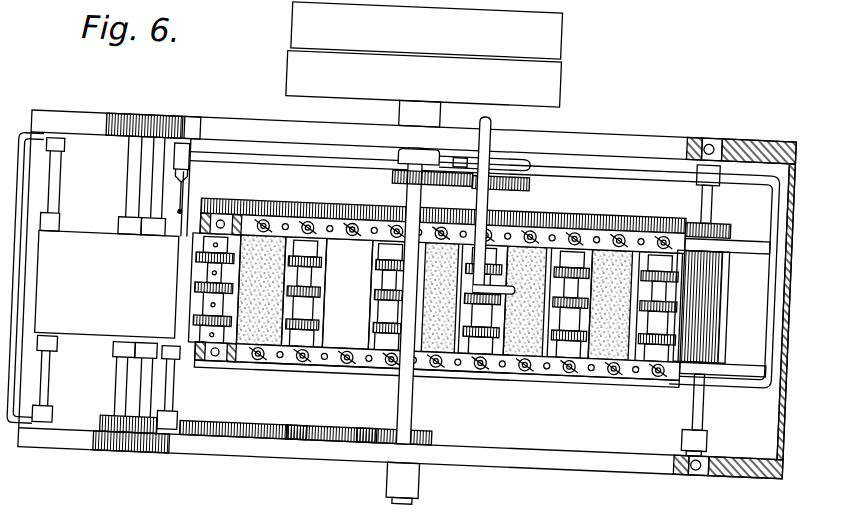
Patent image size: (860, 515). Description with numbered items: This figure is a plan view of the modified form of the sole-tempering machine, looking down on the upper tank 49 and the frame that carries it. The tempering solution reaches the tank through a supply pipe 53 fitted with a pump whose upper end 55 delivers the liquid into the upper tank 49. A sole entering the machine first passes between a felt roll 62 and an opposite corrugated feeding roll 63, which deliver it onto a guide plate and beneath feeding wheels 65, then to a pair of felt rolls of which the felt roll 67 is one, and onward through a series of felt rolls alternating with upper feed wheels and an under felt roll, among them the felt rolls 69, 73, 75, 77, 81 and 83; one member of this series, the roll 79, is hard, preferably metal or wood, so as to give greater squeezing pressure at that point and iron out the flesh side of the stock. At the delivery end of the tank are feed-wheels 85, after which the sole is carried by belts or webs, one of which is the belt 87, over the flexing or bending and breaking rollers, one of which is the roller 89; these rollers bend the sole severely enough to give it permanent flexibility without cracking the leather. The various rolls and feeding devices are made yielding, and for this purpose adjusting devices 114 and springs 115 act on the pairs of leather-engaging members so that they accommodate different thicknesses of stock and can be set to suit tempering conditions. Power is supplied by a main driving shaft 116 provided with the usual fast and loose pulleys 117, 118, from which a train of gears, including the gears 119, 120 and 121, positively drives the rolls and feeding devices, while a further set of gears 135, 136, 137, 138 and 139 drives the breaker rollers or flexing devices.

The upper tank 49 is at (757, 360).
The supply pipe 53 is at (491, 102).
The upper end of the pump 55 is at (492, 353).
The felt roll 62 is at (735, 303).
The corrugated feeding roll 63 is at (716, 250).
The feeding wheels 65 is at (684, 250).
The felt roll 67 is at (645, 260).
The felt roll 69 is at (590, 290).
The felt roll 73 is at (489, 355).
The felt roll 75 is at (448, 352).
The felt roll 77 is at (383, 315).
The hard roll 79 is at (383, 290).
The felt roll 81 is at (326, 282).
The felt roll 83 is at (250, 330).
The feed-wheels 85 is at (200, 262).
The flexing belt 87 is at (107, 284).
The breaking roller 89 is at (122, 372).
The adjusting devices 114 is at (300, 207).
The springs 115 is at (711, 116).
The main driving shaft 116 is at (424, 386).
The fast pulley 117 is at (423, 91).
The loose pulley 118 is at (427, 30).
The gear 119 is at (394, 162).
The gear 120 is at (463, 144).
The gear 121 is at (530, 165).
The gear 135 is at (410, 384).
The gear 136 is at (342, 414).
The gear 137 is at (308, 430).
The gear 138 is at (262, 410).
The gear 139 is at (212, 447).